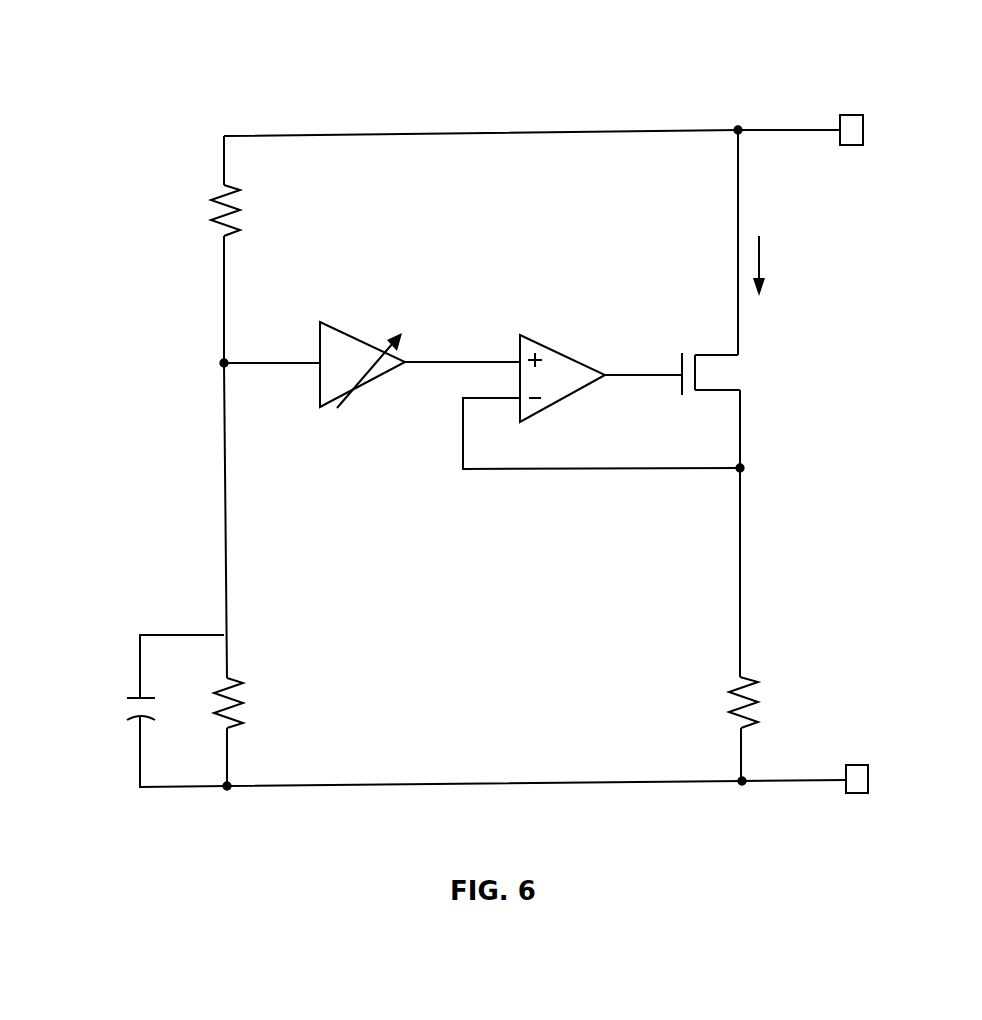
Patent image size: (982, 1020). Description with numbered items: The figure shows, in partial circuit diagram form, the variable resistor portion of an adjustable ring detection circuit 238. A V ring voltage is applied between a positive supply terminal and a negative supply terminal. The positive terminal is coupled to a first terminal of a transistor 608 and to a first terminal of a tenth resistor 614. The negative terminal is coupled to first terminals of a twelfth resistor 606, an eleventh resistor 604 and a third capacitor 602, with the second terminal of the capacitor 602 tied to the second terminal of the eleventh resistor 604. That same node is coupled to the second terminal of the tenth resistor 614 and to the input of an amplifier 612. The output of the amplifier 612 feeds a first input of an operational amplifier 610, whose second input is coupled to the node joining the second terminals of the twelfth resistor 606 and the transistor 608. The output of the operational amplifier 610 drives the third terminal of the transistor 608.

The adjustable ring detection circuit 238 is at (315, 72).
The capacitor C3 602 is at (146, 720).
The resistor R11 604 is at (237, 729).
The resistor R12 606 is at (748, 664).
The transistor 608 is at (741, 404).
The operational amplifier 610 is at (535, 341).
The amplifier 612 is at (333, 326).
The resistor R10 614 is at (222, 232).